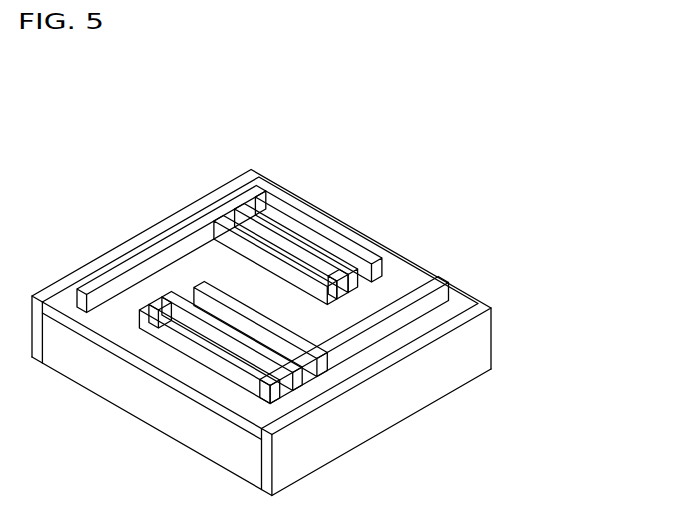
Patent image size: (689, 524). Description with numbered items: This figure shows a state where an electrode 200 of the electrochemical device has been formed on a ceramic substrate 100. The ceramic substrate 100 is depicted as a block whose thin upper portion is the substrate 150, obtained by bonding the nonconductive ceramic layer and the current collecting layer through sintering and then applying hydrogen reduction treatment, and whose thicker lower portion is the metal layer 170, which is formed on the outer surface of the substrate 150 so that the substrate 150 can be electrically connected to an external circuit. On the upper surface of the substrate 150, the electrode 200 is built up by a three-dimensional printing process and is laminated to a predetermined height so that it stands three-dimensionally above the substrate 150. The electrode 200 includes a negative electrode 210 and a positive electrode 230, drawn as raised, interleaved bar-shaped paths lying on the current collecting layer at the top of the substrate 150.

The ceramic substrate 100 is at (333, 333).
The substrate 150 is at (457, 298).
The metal layer 170 is at (482, 348).
The electrode 200 is at (278, 237).
The negative electrode 210 is at (340, 237).
The positive electrode 230 is at (413, 288).